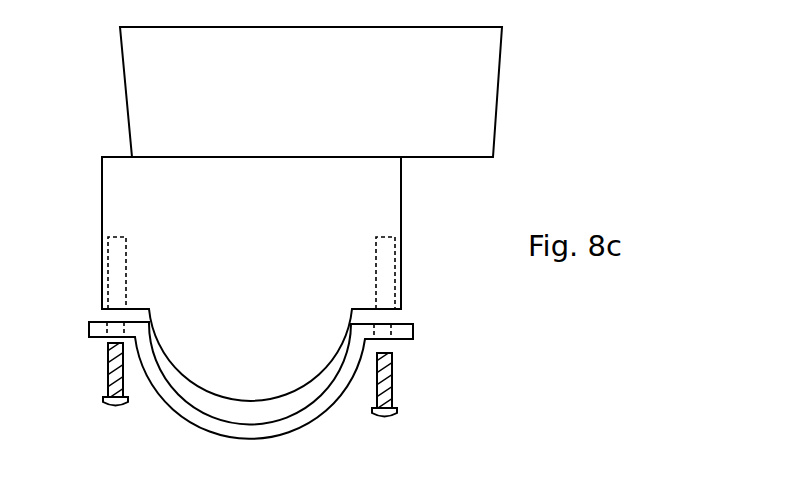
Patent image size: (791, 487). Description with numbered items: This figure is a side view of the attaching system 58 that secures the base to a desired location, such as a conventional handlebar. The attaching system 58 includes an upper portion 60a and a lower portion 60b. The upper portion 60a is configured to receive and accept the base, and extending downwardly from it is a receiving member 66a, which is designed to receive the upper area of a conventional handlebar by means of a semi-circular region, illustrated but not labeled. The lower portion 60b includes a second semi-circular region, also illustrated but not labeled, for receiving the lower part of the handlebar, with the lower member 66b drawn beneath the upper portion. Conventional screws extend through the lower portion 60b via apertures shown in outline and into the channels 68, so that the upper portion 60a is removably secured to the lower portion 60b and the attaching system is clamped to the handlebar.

The attaching system 58 is at (280, 280).
The upper portion 60a is at (96, 151).
The lower portion 60b is at (410, 384).
The receiving member 66a is at (391, 199).
The lower clamp member 66b is at (266, 424).
The channels 68 is at (388, 258).